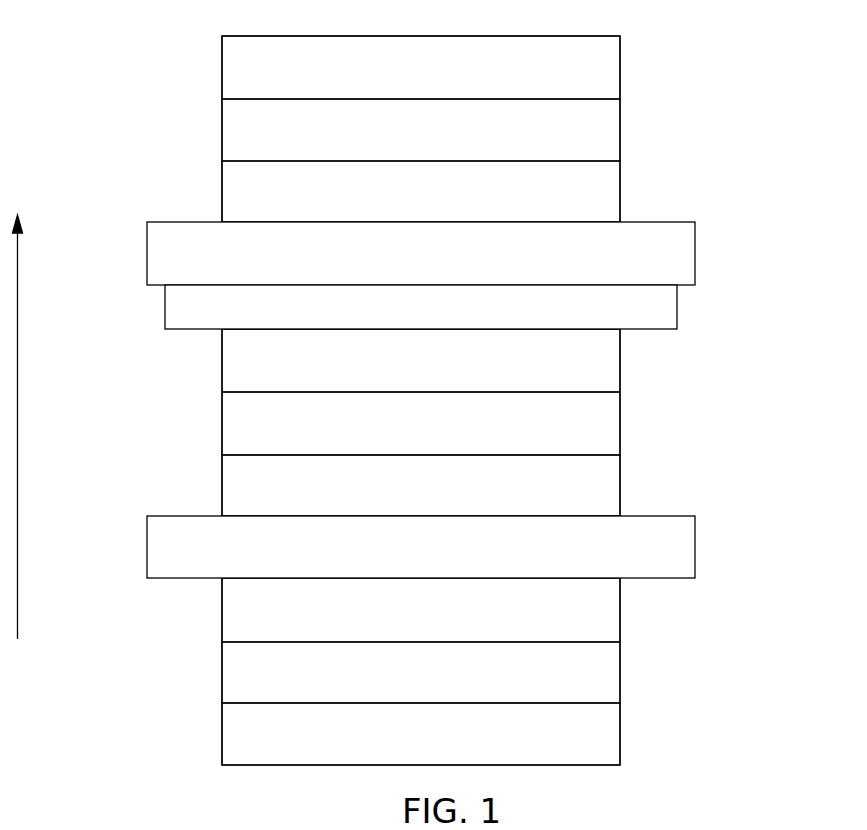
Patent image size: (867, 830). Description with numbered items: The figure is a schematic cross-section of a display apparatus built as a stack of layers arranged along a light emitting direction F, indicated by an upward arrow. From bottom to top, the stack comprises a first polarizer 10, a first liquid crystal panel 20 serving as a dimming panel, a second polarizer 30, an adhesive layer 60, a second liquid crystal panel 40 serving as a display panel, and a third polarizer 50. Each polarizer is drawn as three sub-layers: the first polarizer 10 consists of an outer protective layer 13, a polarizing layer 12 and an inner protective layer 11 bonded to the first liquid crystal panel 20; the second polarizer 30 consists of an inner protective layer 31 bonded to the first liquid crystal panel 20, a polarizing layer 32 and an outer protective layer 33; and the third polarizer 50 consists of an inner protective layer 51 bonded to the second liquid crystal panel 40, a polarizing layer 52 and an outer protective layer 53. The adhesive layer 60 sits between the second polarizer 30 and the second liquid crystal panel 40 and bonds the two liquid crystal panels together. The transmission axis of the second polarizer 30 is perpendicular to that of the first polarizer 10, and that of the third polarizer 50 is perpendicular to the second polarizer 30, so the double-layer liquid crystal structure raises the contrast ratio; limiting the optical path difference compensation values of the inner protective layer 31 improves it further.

The first polarizer 10 is at (538, 664).
The inner protective layer of the first polarizer 11 is at (607, 632).
The polarizing layer of the first polarizer 12 is at (607, 697).
The outer protective layer of the first polarizer 13 is at (490, 721).
The first liquid crystal panel 20 is at (188, 568).
The second polarizer 30 is at (541, 413).
The inner protective layer of the second polarizer 31 is at (493, 472).
The polarizing layer of the second polarizer 32 is at (613, 447).
The outer protective layer of the second polarizer 33 is at (613, 382).
The second liquid crystal panel 40 is at (180, 257).
The third polarizer 50 is at (538, 116).
The inner protective layer of the third polarizer 51 is at (490, 176).
The polarizing layer of the third polarizer 52 is at (607, 146).
The outer protective layer of the third polarizer 53 is at (607, 80).
The adhesive layer 60 is at (192, 317).
The light emitting direction F is at (33, 427).